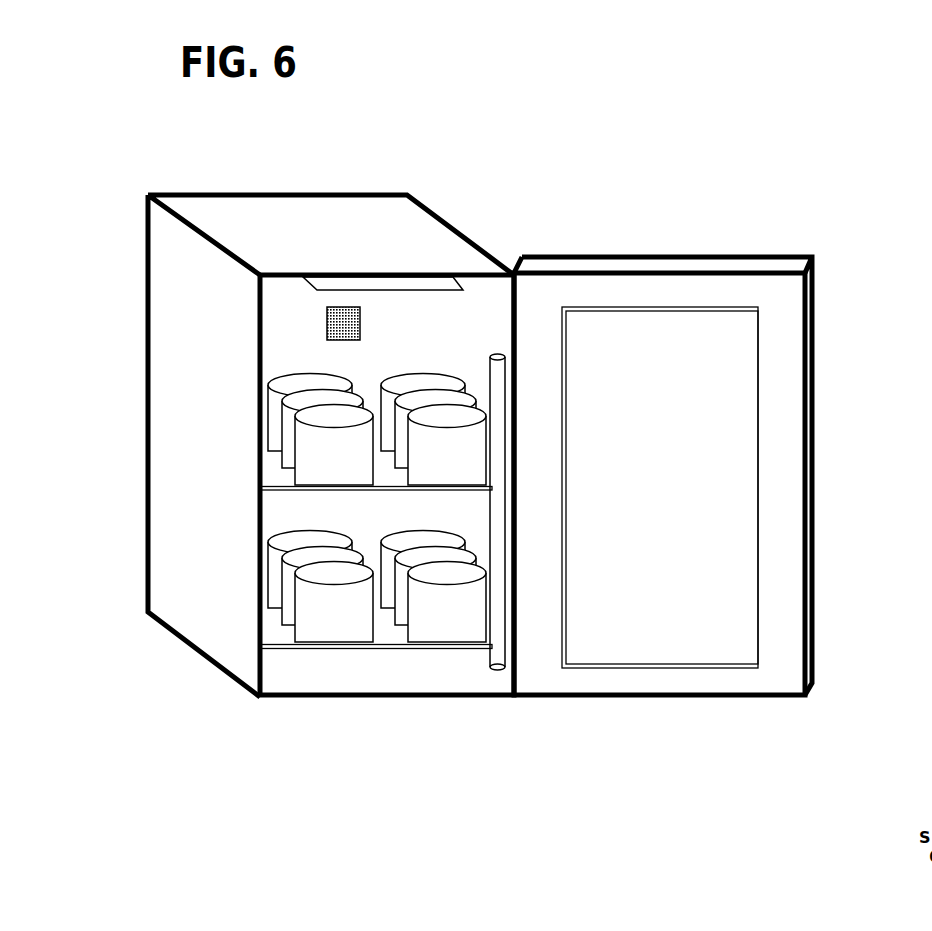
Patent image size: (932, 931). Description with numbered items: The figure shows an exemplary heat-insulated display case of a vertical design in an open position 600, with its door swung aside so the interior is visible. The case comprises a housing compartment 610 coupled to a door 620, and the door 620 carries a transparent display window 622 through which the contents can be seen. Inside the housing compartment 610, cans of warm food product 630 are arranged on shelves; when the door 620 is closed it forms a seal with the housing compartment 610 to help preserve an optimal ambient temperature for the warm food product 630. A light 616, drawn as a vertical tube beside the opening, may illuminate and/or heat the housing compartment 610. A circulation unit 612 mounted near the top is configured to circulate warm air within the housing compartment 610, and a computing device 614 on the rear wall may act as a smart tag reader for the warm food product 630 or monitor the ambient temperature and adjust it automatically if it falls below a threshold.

The open position 600 is at (236, 768).
The housing compartment 610 is at (304, 218).
The circulation unit 612 is at (440, 283).
The computing device 614 is at (349, 305).
The light 616 is at (492, 667).
The door 620 is at (640, 270).
The transparent display window 622 is at (672, 387).
The warm food product 630 is at (320, 620).